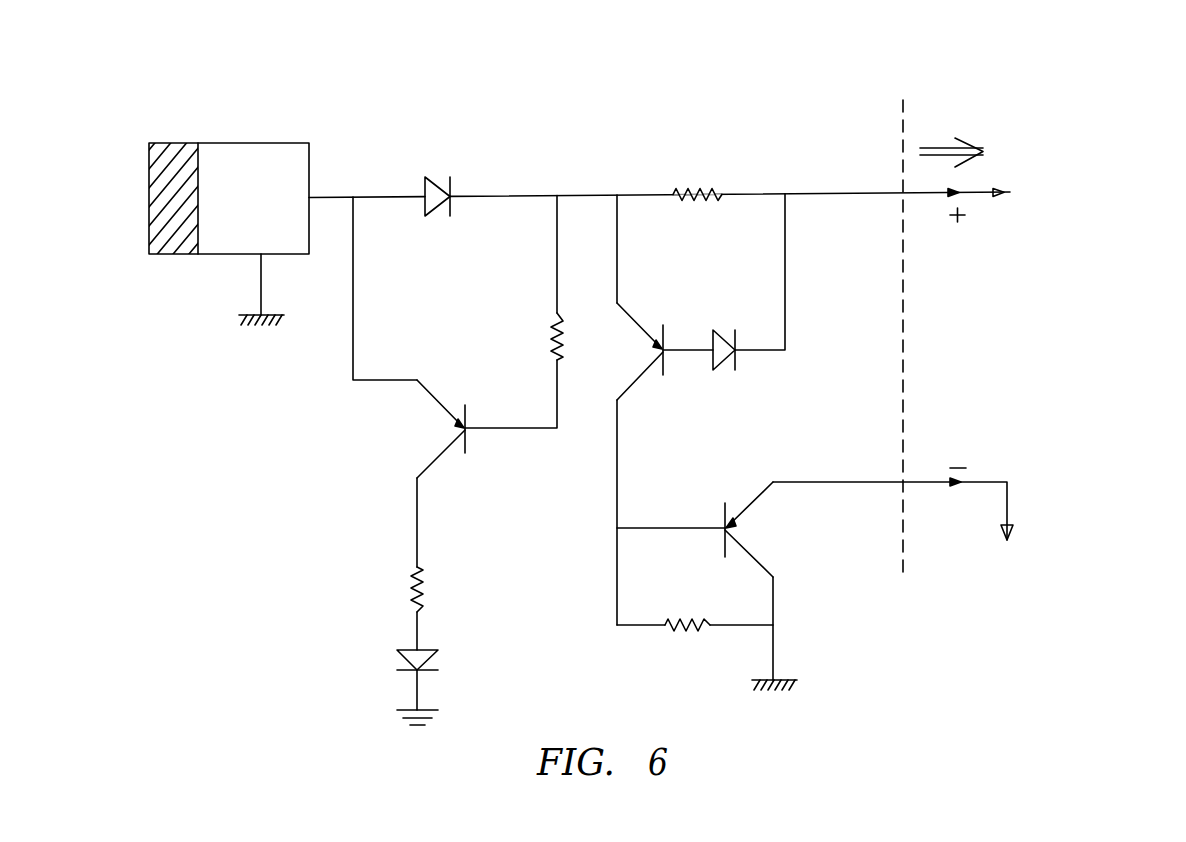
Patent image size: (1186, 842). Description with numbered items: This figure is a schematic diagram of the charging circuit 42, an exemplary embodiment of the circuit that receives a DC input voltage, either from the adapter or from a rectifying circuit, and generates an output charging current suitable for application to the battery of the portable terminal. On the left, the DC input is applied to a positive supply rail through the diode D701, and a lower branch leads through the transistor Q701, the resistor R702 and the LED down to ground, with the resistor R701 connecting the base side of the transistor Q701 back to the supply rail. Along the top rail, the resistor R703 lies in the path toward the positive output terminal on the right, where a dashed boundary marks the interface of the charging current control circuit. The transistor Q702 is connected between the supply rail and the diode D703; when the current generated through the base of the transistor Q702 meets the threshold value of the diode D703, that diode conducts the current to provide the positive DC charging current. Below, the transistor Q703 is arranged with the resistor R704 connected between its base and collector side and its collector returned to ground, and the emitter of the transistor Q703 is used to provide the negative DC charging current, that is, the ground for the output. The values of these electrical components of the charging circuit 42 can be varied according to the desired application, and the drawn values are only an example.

The charging circuit 42 is at (576, 368).
The diode 1N4004 D701 is at (460, 160).
The resistor 1.2K R701 is at (523, 340).
The resistor 3.9K R702 is at (454, 590).
The resistor 15.1 ohm 4W R703 is at (692, 159).
The resistor 1K R704 is at (691, 658).
The transistor 2N2907A Q701 is at (488, 436).
The transistor Q702 is at (675, 329).
The transistor Q703 is at (806, 529).
The diode D703 is at (728, 385).
The light emitting diode LED is at (445, 657).